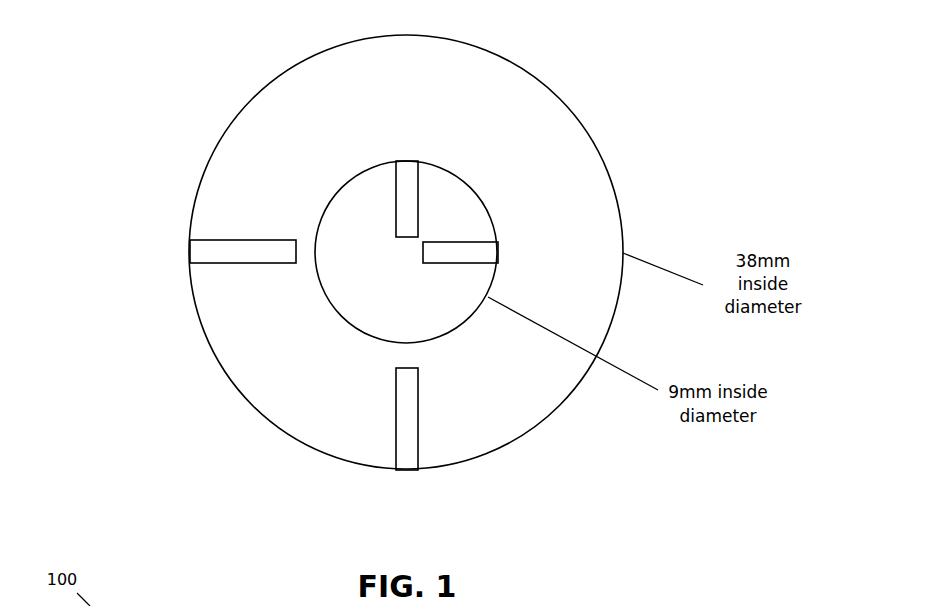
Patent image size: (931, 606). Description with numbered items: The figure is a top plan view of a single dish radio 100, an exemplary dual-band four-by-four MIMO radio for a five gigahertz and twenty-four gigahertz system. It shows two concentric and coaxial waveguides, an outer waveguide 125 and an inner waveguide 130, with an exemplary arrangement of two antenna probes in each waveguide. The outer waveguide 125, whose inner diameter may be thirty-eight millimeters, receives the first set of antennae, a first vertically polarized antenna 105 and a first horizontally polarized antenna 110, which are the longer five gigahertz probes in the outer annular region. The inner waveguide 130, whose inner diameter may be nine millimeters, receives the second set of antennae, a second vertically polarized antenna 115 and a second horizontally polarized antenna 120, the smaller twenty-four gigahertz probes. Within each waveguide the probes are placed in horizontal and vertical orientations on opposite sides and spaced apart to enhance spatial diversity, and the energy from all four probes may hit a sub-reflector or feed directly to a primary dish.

The single dish radio 100 is at (728, 87).
The first vertically polarized antenna 105 is at (418, 418).
The first horizontally polarized antenna 110 is at (242, 263).
The second vertically polarized antenna 115 is at (397, 198).
The second horizontally polarized antenna 120 is at (462, 242).
The outer waveguide 125 is at (230, 123).
The inner waveguide 130 is at (340, 318).